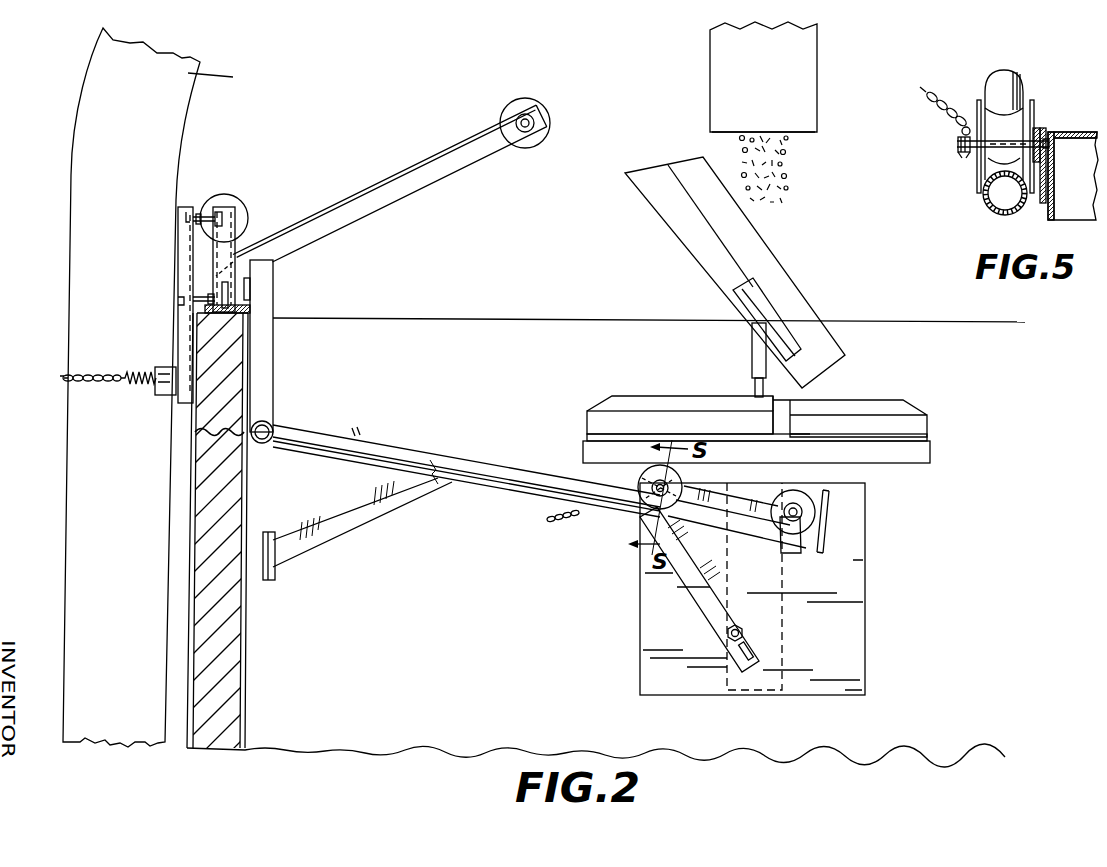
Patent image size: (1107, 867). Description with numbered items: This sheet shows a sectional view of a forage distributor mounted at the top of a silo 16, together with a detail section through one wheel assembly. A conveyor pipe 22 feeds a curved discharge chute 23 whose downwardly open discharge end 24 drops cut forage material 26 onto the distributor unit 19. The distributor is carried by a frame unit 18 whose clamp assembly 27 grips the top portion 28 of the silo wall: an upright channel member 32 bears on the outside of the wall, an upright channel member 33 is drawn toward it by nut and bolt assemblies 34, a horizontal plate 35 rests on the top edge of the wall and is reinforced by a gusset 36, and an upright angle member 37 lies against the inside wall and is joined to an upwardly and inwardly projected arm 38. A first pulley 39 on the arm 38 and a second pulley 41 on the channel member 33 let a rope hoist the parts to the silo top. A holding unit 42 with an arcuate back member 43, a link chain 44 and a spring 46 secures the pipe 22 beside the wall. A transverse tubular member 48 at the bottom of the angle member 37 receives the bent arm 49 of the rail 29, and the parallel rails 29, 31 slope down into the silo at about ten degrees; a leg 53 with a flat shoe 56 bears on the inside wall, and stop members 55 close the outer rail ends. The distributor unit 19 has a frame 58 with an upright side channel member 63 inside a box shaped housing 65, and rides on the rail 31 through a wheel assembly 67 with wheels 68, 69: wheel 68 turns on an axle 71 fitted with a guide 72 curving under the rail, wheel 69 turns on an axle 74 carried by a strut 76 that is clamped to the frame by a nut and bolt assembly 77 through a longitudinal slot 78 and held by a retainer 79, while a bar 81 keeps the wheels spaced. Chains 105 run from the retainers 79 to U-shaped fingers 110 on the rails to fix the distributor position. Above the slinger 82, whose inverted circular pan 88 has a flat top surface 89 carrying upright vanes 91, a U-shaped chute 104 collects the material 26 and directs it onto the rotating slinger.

In FIG. 2, the silo 16 is at (250, 533).
In FIG. 2, the frame unit 18 is at (365, 537).
In FIG. 2, the distributor unit 19 is at (779, 277).
In FIG. 2, the upright pipe 22 is at (78, 446).
In FIG. 2, the discharge chute 23 is at (812, 48).
In FIG. 2, the discharge end 24 is at (800, 133).
In FIG. 2, the forage material 26 is at (790, 172).
In FIG. 2, the clamp assembly 27 is at (340, 244).
In FIG. 2, the top portion of silo wall 28 is at (237, 371).
In FIG. 2, the rail 29 is at (466, 456).
In FIG. 2, the rail 31 is at (515, 476).
In FIG. 5, the rail 31 is at (990, 200).
In FIG. 2, the upright channel member 32 is at (186, 242).
In FIG. 2, the upright channel member 33 is at (236, 252).
In FIG. 2, the nut and bolt assemblies 34 is at (206, 210).
In FIG. 2, the horizontal plate 35 is at (250, 312).
In FIG. 2, the gusset 36 is at (246, 287).
In FIG. 2, the upright angle member 37 is at (270, 300).
In FIG. 2, the arm 38 is at (427, 158).
In FIG. 2, the first pulley 39 is at (521, 100).
In FIG. 2, the second pulley 41 is at (229, 196).
In FIG. 2, the holding unit 42 is at (153, 384).
In FIG. 2, the arcuate back member 43 is at (163, 395).
In FIG. 2, the link chain 44 is at (97, 372).
In FIG. 2, the spring 46 is at (136, 388).
In FIG. 2, the tubular member 48 is at (283, 438).
In FIG. 2, the bent arm 49 is at (262, 444).
In FIG. 2, the leg 53 is at (363, 508).
In FIG. 2, the stop members 55 is at (752, 608).
In FIG. 2, the flat shoe 56 is at (277, 578).
In FIG. 2, the frame 58 is at (694, 703).
In FIG. 5, the frame 58 is at (1097, 124).
In FIG. 2, the upright side channel member 63 is at (783, 648).
In FIG. 2, the housing 65 is at (640, 640).
In FIG. 2, the wheel assembly 67 is at (637, 514).
In FIG. 2, the wheel 68 is at (803, 498).
In FIG. 2, the wheel 69 is at (654, 487).
In FIG. 5, the wheel 69 is at (1033, 103).
In FIG. 2, the axle 71 is at (807, 523).
In FIG. 2, the guide 72 is at (787, 552).
In FIG. 2, the axle 74 is at (652, 498).
In FIG. 5, the axle 74 is at (957, 145).
In FIG. 2, the strut 76 is at (714, 589).
In FIG. 5, the strut 76 is at (1046, 126).
In FIG. 2, the nut and bolt assembly 77 is at (747, 631).
In FIG. 2, the longitudinal slot 78 is at (727, 617).
In FIG. 5, the retainer 79 is at (961, 131).
In FIG. 2, the bar 81 is at (717, 486).
In FIG. 5, the bar 81 is at (1036, 127).
In FIG. 2, the slinger 82 is at (938, 408).
In FIG. 2, the inverted circular pan 88 is at (932, 452).
In FIG. 2, the flat top surface 89 is at (912, 437).
In FIG. 2, the upright vanes 91 is at (600, 421).
In FIG. 2, the chute 104 is at (708, 263).
In FIG. 2, the chains 105 is at (552, 523).
In FIG. 5, the chains 105 is at (934, 92).
In FIG. 2, the U-shaped fingers 110 is at (356, 427).